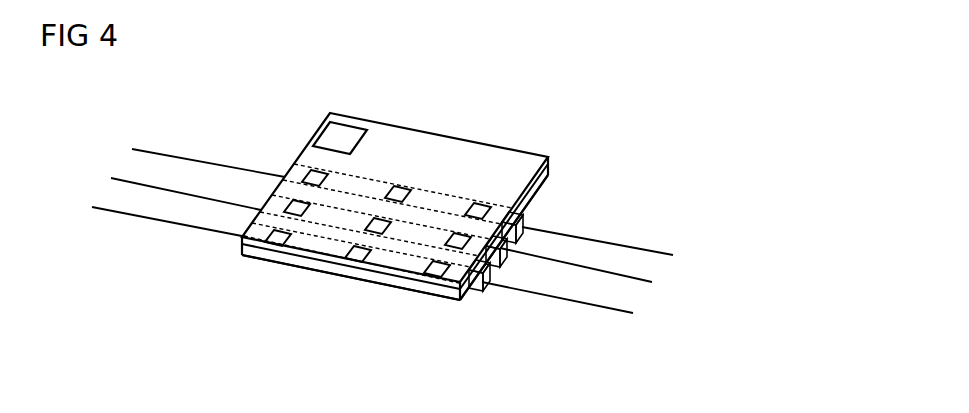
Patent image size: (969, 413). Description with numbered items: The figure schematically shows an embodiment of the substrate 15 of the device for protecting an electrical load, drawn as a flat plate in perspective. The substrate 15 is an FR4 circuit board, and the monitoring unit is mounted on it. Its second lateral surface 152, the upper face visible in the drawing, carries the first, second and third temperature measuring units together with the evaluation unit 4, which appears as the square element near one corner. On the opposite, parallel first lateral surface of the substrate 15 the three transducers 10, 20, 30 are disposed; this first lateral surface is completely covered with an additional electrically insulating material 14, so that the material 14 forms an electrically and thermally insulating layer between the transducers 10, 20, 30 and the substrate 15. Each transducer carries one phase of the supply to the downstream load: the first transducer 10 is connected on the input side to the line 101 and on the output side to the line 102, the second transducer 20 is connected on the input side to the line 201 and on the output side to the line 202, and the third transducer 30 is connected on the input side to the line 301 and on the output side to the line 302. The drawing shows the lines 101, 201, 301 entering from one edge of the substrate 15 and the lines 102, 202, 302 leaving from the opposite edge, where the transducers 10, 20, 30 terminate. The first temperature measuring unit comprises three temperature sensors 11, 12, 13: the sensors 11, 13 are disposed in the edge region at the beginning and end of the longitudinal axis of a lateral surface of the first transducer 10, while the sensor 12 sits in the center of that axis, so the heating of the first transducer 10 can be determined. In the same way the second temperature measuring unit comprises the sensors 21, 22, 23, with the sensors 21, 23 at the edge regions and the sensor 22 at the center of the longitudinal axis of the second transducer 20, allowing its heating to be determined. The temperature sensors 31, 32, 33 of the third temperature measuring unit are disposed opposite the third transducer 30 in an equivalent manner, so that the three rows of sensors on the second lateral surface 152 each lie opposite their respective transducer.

The evaluation unit 4 is at (348, 136).
The second lateral surface 152 is at (388, 138).
The first transducer 10 is at (481, 288).
The temperature sensor 11 is at (275, 246).
The temperature sensor 12 is at (356, 259).
The temperature sensor 13 is at (438, 274).
The electrically insulating material 14 is at (283, 263).
The substrate 15 is at (242, 246).
The second transducer 20 is at (506, 251).
The temperature sensor 21 is at (301, 217).
The temperature sensor 22 is at (386, 234).
The temperature sensor 23 is at (488, 270).
The third transducer 30 is at (522, 221).
The temperature sensor 31 is at (316, 176).
The temperature sensor 32 is at (398, 190).
The temperature sensor 33 is at (481, 207).
The line 101 is at (95, 208).
The line 102 is at (612, 309).
The line 201 is at (127, 180).
The line 202 is at (642, 279).
The line 301 is at (222, 165).
The line 302 is at (650, 250).